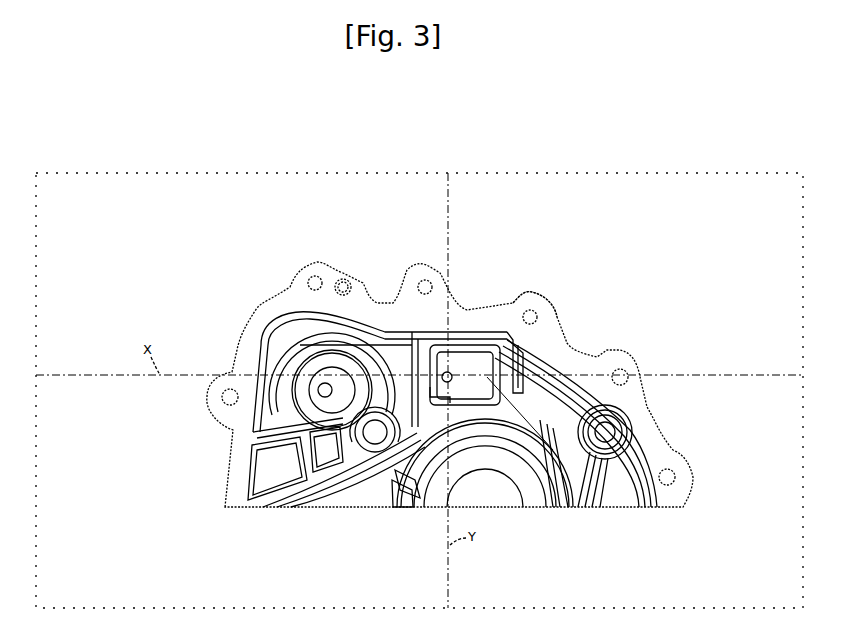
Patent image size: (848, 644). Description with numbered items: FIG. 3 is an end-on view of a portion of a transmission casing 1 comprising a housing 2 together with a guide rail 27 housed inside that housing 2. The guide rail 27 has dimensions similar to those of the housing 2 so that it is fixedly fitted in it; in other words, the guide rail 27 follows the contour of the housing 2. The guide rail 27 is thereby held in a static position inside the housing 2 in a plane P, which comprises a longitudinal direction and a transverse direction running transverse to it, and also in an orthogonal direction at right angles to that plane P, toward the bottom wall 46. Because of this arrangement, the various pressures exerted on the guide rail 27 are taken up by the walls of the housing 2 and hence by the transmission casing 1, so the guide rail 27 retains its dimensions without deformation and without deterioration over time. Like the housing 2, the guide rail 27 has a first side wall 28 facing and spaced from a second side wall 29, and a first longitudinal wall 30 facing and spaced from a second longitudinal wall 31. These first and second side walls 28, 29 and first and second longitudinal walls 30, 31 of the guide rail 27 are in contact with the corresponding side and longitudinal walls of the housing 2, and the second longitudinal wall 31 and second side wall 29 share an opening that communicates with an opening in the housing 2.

The transmission casing 1 is at (578, 322).
The housing 2 is at (545, 300).
The guide rail 27 is at (455, 343).
The first side wall 28 is at (428, 347).
The second side wall 29 is at (540, 352).
The first longitudinal wall 30 is at (464, 356).
The second longitudinal wall 31 is at (412, 492).
The bottom wall 46 is at (597, 455).
The plane P is at (190, 173).